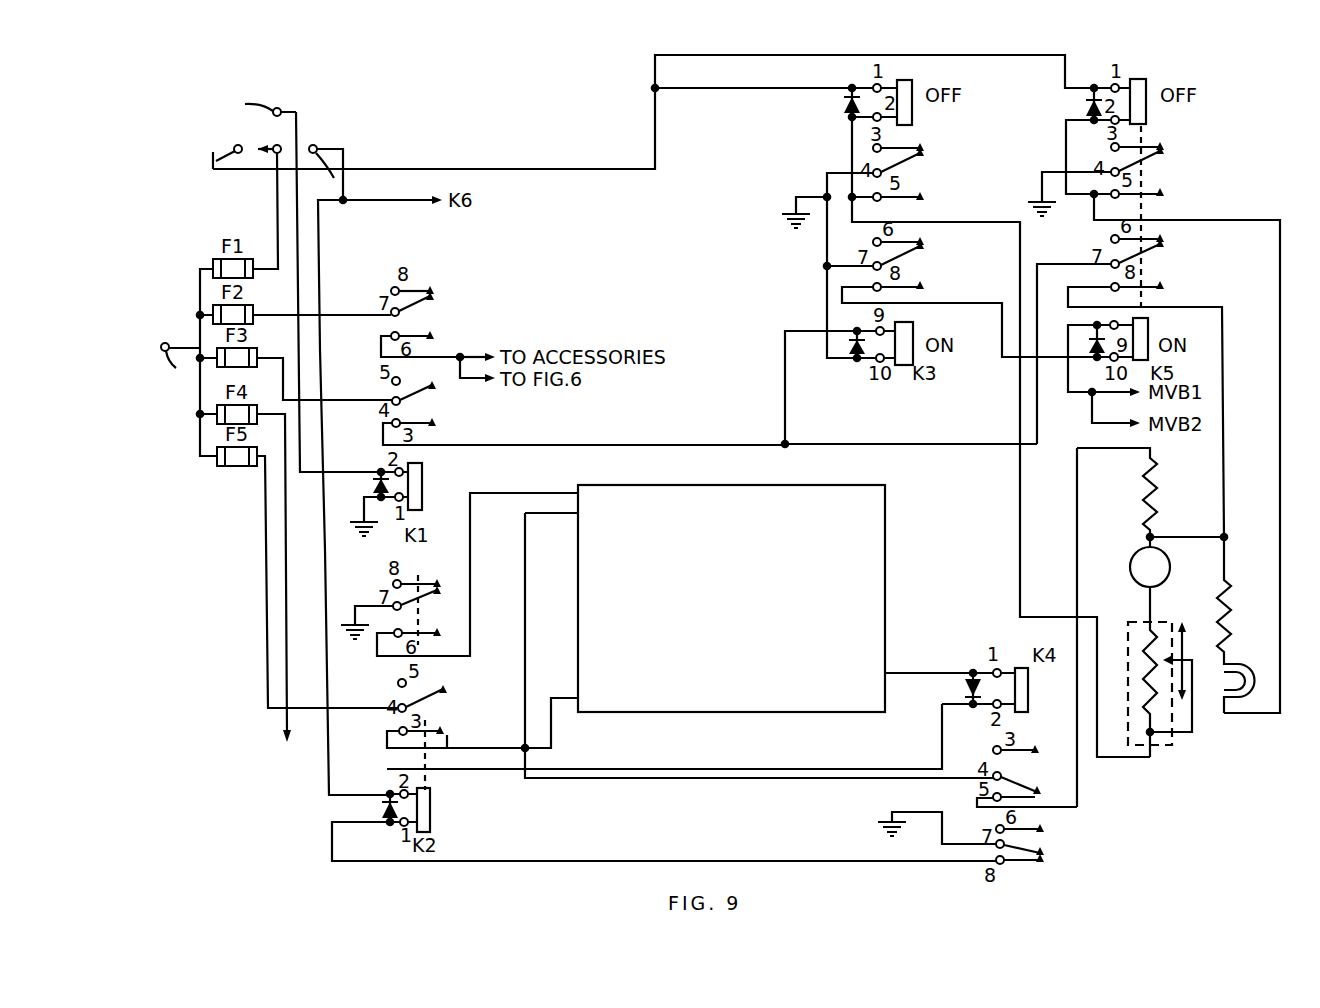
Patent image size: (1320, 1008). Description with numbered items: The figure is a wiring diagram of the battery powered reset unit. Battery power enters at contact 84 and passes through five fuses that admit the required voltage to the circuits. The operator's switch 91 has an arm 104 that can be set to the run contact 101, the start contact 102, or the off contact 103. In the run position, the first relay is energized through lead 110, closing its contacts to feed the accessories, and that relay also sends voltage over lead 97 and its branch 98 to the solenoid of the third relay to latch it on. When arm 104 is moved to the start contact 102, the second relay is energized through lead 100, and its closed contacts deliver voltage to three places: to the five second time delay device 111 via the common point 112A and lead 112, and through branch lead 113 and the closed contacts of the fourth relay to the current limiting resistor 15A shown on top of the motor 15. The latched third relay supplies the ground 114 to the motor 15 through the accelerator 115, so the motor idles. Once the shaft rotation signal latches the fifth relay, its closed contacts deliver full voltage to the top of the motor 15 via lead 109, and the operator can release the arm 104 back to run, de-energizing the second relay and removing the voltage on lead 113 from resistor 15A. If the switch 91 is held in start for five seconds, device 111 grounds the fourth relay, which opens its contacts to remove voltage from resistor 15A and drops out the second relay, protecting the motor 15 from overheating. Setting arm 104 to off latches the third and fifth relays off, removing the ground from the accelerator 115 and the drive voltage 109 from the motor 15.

The switch 91 is at (256, 144).
The run contact 101 is at (247, 109).
The start contact 102 is at (320, 172).
The off contact 103 is at (213, 164).
The switch arm 104 is at (260, 153).
The lead 110 is at (317, 240).
The lead 100 is at (320, 274).
The battery power input contact 84 is at (172, 365).
The lead 97 is at (665, 445).
The branch lead 98 is at (786, 413).
The drive voltage lead 109 is at (958, 426).
The five second time delay device 111 is at (879, 518).
The lead 112 is at (447, 736).
The common point 112A is at (524, 753).
The branch lead 113 is at (636, 772).
The ground 114 is at (794, 206).
The accelerator 115 is at (1172, 746).
The motor 15 is at (1130, 568).
The current limiting resistor 15A is at (1158, 498).